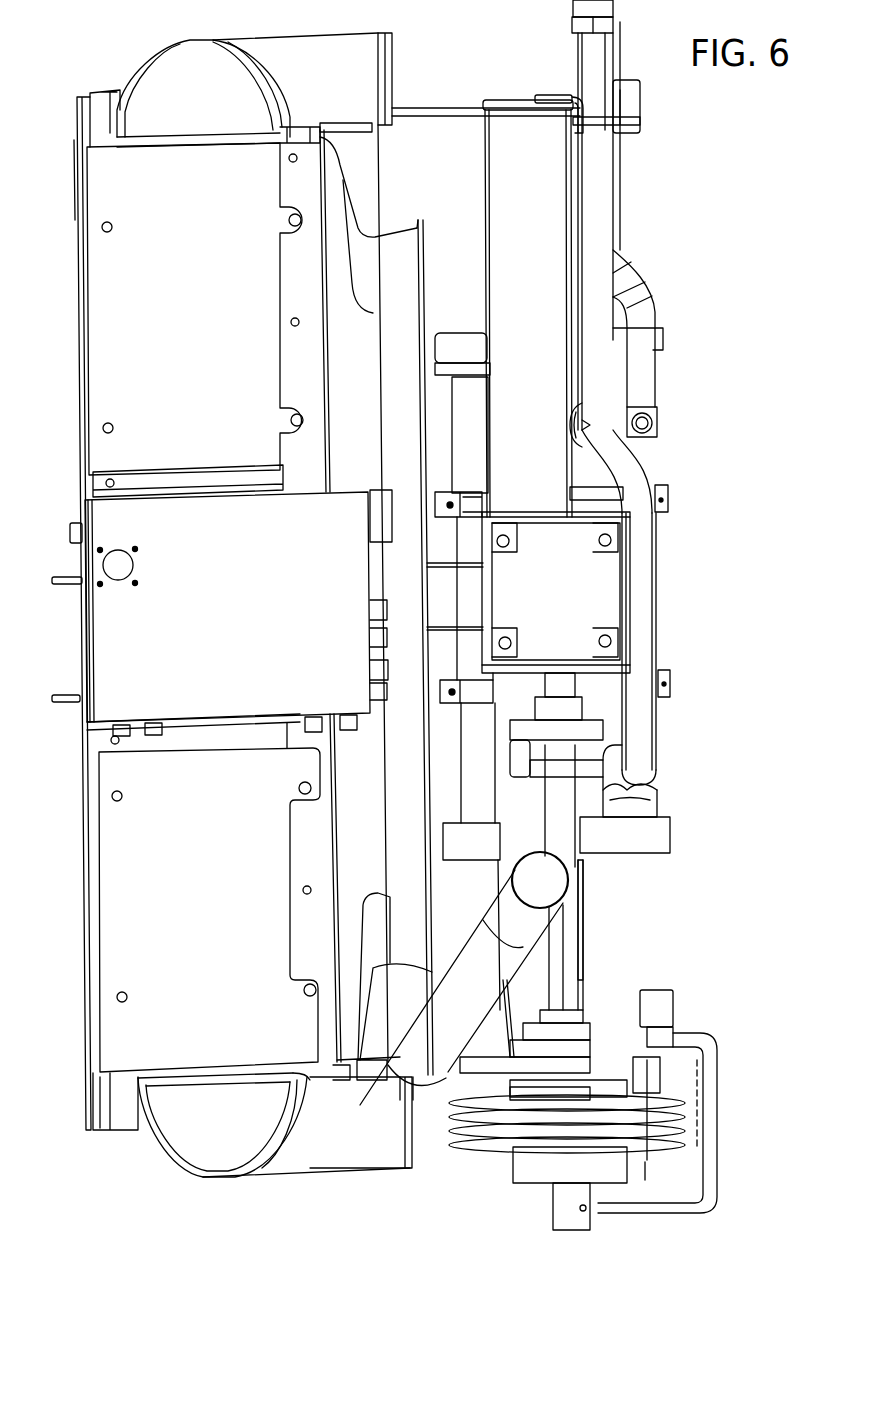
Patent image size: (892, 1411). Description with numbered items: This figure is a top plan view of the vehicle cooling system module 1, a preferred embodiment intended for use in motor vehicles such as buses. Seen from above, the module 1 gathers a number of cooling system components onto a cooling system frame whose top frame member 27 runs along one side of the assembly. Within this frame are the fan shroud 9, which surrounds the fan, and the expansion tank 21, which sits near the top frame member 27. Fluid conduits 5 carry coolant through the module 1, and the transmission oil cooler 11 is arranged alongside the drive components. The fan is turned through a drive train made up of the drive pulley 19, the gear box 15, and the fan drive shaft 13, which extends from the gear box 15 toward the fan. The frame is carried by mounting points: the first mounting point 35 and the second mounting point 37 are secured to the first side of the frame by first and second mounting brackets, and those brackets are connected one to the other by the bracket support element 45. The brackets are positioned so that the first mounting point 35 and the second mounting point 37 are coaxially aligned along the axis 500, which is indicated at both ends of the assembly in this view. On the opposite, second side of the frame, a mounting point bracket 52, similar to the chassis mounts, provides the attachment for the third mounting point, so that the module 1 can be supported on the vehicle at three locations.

The cooling system module 1 is at (765, 185).
The fluid conduits 5 is at (427, 1050).
The fan shroud 9 is at (338, 215).
The transmission oil cooler 11 is at (640, 793).
The fan drive shaft 13 is at (568, 905).
The gear box 15 is at (600, 590).
The drive pulley 19 is at (483, 1133).
The expansion tank 21 is at (118, 523).
The top frame member 27 is at (105, 320).
The first mounting point 35 is at (652, 118).
The second mounting point 37 is at (684, 1089).
The bracket support element 45 is at (550, 477).
The mounting point bracket 52 is at (62, 578).
The axis 500 is at (577, 67).